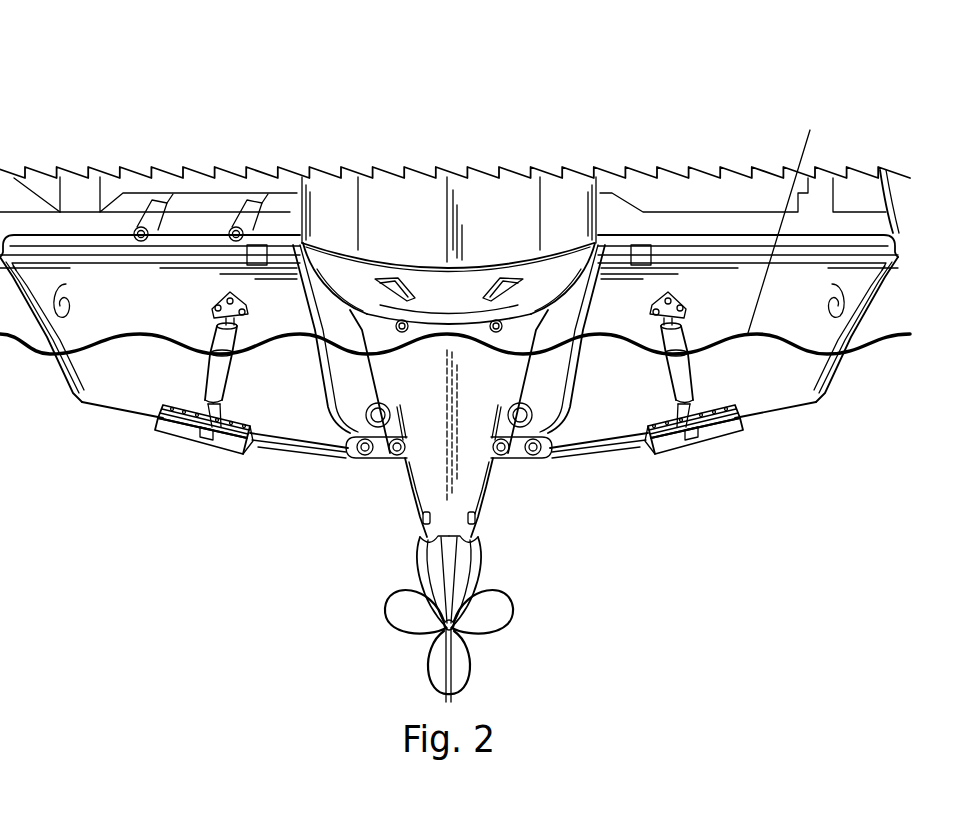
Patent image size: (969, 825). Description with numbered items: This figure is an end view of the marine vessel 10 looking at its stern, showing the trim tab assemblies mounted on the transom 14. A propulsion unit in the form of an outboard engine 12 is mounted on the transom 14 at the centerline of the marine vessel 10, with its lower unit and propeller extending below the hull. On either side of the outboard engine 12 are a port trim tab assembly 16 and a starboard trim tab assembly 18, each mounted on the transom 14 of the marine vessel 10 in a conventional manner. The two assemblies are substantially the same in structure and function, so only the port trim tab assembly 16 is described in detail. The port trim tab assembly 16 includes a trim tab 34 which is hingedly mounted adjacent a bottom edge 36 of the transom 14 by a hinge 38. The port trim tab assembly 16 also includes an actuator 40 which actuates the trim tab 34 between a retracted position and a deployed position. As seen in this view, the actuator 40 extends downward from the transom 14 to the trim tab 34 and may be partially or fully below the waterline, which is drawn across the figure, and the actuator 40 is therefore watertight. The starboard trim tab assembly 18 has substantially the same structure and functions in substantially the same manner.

The marine vessel 10 is at (108, 128).
The outboard engine 12 is at (494, 228).
The transom 14 is at (81, 407).
The port trim tab assembly 16 is at (229, 452).
The starboard trim tab assembly 18 is at (679, 452).
The trim tab 34 is at (217, 370).
The bottom edge 36 is at (305, 457).
The hinge 38 is at (267, 431).
The actuator 40 is at (114, 383).